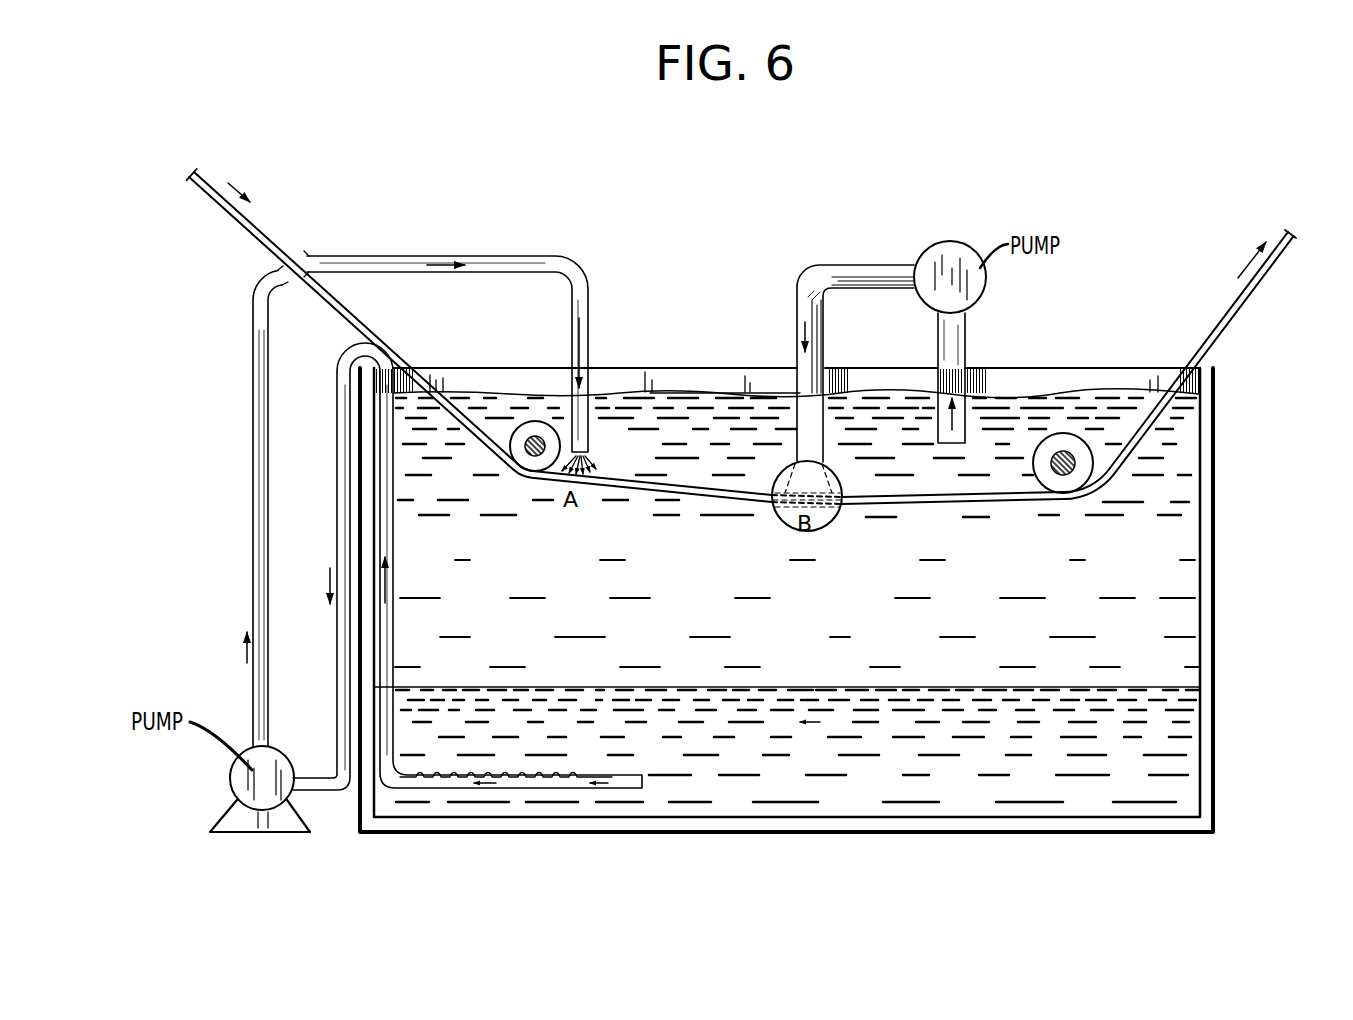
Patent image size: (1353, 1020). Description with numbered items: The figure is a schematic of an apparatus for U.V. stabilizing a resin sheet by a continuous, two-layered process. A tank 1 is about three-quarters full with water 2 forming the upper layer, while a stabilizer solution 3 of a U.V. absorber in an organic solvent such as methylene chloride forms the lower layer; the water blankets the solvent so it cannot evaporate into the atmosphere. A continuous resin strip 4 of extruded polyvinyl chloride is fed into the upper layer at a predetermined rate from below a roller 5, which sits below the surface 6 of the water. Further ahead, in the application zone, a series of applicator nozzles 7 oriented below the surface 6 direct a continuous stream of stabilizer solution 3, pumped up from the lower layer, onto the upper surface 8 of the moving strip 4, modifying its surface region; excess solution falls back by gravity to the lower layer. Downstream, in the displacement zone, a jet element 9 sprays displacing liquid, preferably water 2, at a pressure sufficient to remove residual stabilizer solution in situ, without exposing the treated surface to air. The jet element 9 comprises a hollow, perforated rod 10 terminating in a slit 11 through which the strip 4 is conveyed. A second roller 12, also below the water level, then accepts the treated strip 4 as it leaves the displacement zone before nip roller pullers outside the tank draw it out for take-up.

The tank 1 is at (713, 834).
The water 2 is at (1015, 425).
The stabilizer solution 3 is at (672, 490).
The resin strip 4 is at (265, 232).
The roller 5 is at (535, 441).
The surface 6 is at (722, 392).
The applicator nozzles 7 is at (590, 451).
The upper surface 8 is at (531, 473).
The jet element 9 is at (831, 312).
The hollow perforated rod 10 is at (822, 347).
The slit 11 is at (843, 503).
The second roller 12 is at (1076, 445).